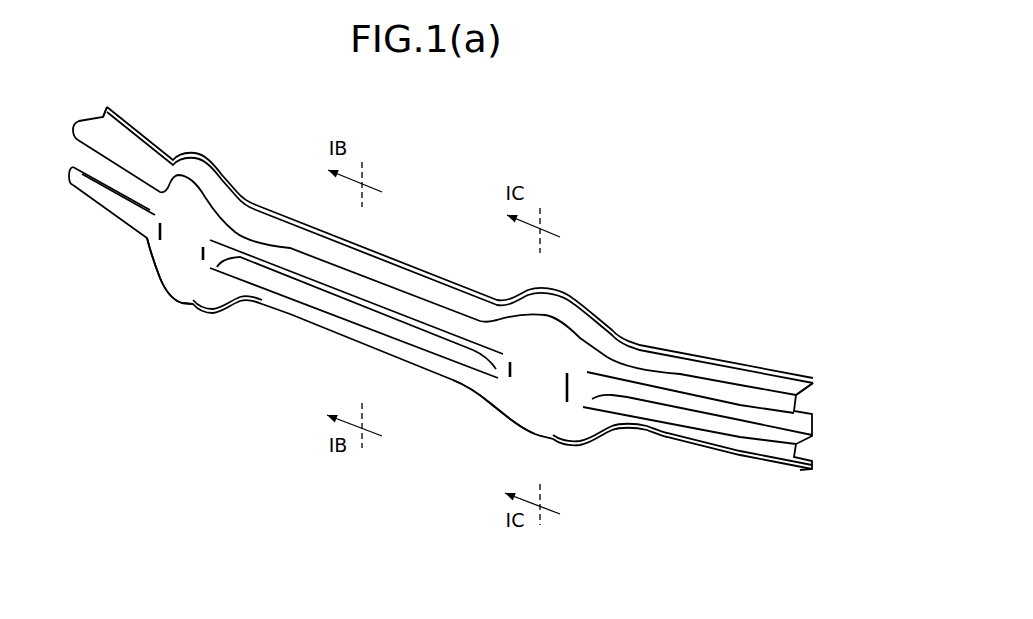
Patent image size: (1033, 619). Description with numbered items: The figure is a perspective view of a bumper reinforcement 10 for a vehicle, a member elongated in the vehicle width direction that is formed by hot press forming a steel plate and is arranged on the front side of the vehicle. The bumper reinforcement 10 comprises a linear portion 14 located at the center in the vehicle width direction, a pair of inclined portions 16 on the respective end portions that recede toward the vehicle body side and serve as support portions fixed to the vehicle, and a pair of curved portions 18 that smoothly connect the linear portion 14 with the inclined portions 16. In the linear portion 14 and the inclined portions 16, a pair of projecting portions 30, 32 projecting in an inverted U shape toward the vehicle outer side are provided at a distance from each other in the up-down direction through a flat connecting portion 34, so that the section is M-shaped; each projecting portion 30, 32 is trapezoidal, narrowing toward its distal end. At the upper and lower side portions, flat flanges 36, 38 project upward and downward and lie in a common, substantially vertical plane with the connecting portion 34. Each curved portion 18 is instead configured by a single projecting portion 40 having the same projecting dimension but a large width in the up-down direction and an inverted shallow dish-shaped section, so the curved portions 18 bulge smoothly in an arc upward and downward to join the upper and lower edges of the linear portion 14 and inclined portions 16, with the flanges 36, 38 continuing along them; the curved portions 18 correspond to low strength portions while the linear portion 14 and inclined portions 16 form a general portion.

The bumper reinforcement 10 is at (431, 301).
The linear portion 14 is at (383, 230).
The inclined portions 16 is at (155, 118).
The curved portions 18 is at (140, 305).
The projecting portion 30 is at (85, 143).
The projecting portion 32 is at (90, 198).
The connecting portion 34 is at (395, 316).
The flange 36 is at (277, 212).
The flange 38 is at (650, 435).
The projecting portion 40 is at (180, 225).